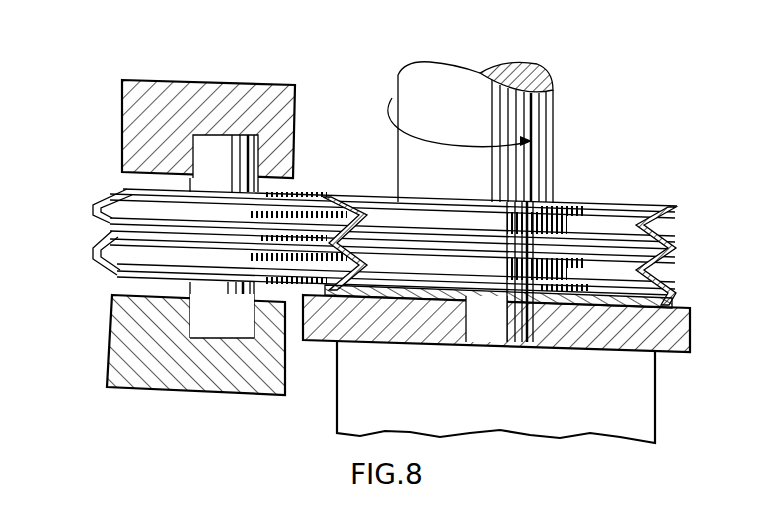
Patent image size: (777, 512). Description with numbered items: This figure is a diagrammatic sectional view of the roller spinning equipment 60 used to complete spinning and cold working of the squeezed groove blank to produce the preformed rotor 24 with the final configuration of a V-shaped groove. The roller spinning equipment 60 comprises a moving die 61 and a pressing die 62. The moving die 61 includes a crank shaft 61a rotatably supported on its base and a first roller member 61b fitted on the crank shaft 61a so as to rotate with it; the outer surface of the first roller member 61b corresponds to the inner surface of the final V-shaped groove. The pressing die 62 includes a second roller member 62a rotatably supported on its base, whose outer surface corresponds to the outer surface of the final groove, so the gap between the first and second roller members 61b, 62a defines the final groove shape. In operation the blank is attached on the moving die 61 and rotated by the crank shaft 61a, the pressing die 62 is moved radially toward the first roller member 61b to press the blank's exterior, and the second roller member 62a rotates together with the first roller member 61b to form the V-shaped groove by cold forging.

The preformed rotor 24 is at (677, 246).
The roller spinning equipment 60 is at (570, 93).
The moving die 61 is at (655, 393).
The crank shaft 61a is at (545, 150).
The first roller member 61b is at (578, 203).
The pressing die 62 is at (213, 75).
The second roller member 62a is at (103, 208).